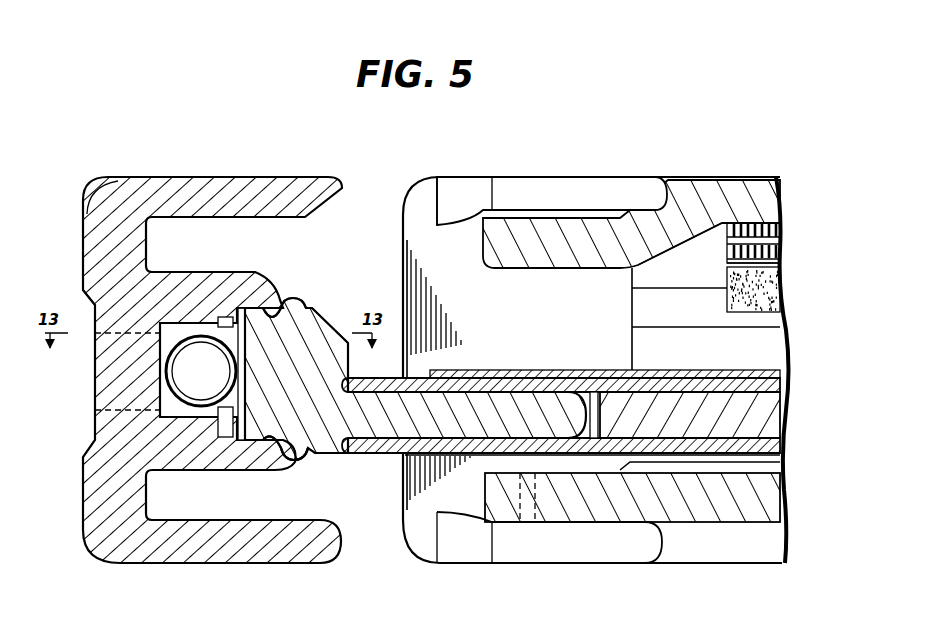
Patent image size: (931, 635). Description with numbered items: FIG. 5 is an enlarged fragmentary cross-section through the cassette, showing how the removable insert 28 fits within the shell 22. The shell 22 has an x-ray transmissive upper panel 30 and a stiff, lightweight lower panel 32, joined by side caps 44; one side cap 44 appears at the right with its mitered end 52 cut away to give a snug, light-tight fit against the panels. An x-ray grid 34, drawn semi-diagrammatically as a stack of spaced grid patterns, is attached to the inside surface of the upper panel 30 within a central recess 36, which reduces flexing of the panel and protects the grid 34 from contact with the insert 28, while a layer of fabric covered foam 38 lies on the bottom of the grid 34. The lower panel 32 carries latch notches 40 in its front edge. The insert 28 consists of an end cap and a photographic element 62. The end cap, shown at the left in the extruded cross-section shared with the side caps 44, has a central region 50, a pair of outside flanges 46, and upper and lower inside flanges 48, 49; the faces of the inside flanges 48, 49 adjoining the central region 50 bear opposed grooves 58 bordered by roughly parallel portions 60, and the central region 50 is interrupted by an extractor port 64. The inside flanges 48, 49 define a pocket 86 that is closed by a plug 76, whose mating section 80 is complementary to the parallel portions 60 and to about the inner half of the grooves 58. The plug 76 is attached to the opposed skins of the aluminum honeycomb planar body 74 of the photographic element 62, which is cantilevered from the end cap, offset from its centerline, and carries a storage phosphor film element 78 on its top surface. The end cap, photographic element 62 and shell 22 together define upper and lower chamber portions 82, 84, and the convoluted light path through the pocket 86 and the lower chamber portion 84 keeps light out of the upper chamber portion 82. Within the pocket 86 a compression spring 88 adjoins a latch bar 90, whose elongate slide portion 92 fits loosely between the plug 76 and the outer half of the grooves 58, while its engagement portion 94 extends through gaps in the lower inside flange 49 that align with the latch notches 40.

The removable insert 28 is at (198, 158).
The outside flanges 46 is at (322, 176).
The upper inside flange 48 is at (192, 308).
The central region 50 is at (150, 333).
The ends of side caps 52 is at (86, 505).
The grooves 58 is at (224, 316).
The parallel portions 60 is at (178, 323).
The photographic element 62 is at (830, 457).
The extractor port 64 is at (86, 385).
The planar body 74 is at (795, 378).
The plug 76 is at (334, 318).
The film element 78 is at (712, 374).
The mating section 80 is at (304, 383).
The upper chamber portion 82 is at (768, 352).
The lower chamber portion 84 is at (772, 463).
The pocket 86 is at (200, 440).
The compression spring 88 is at (224, 378).
The latch bar 90 is at (97, 450).
The slide portion 92 is at (242, 308).
The engagement portion 94 is at (228, 522).
The lower inside flange 49 is at (299, 463).
The shell 22 is at (722, 160).
The upper panel 30 is at (763, 177).
The lower panel 32 is at (786, 514).
The x-ray grid 34 is at (782, 240).
The central recess 36 is at (714, 250).
The fabric covered foam 38 is at (784, 286).
The latch notches 40 is at (562, 500).
The side caps 44 is at (676, 177).